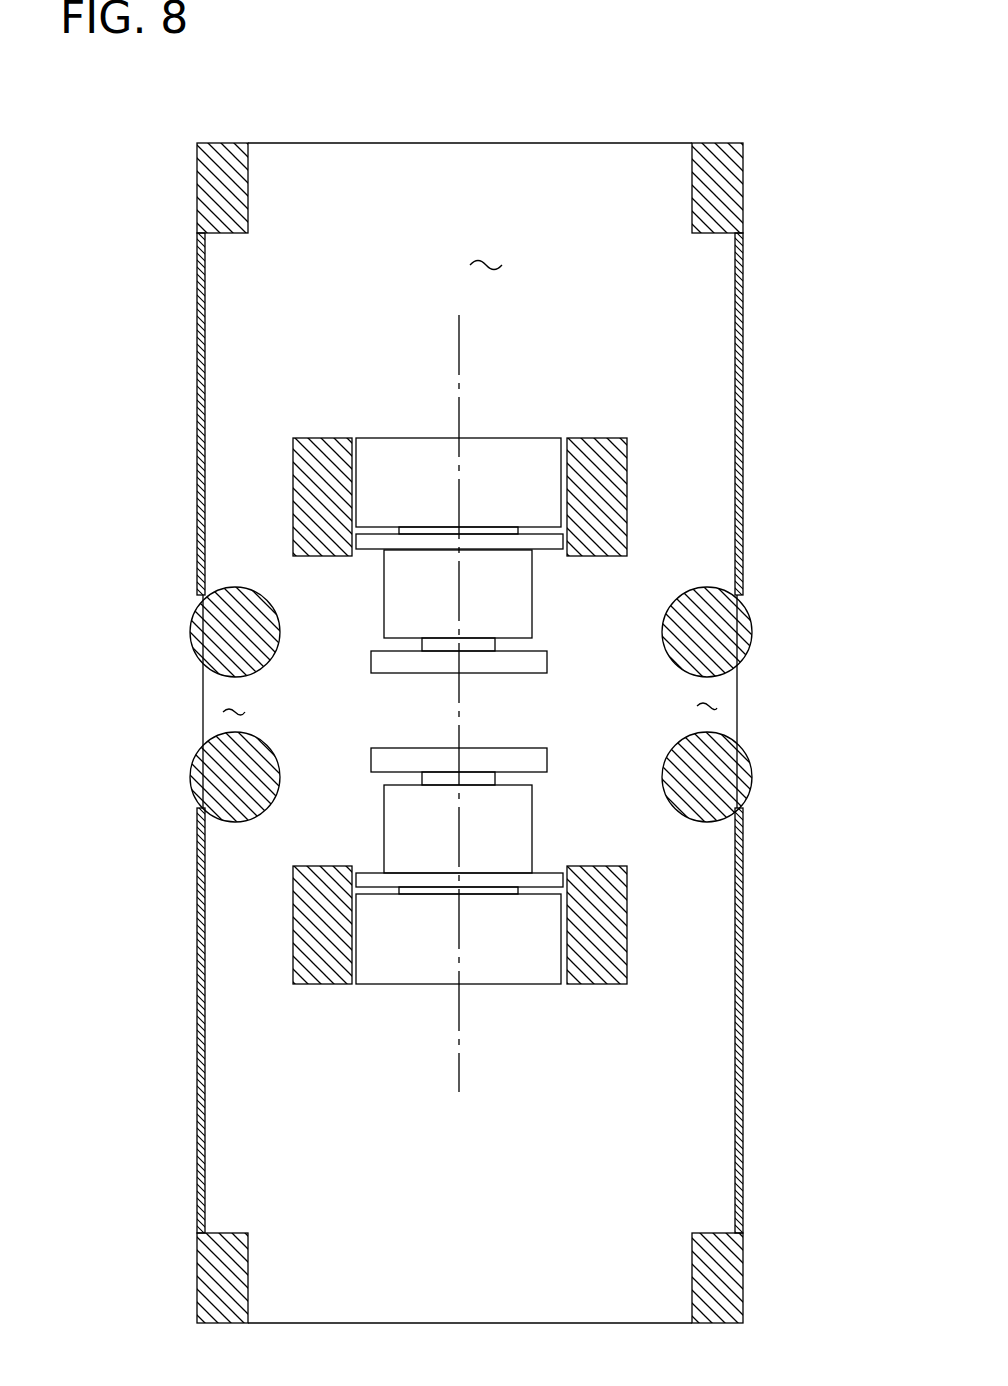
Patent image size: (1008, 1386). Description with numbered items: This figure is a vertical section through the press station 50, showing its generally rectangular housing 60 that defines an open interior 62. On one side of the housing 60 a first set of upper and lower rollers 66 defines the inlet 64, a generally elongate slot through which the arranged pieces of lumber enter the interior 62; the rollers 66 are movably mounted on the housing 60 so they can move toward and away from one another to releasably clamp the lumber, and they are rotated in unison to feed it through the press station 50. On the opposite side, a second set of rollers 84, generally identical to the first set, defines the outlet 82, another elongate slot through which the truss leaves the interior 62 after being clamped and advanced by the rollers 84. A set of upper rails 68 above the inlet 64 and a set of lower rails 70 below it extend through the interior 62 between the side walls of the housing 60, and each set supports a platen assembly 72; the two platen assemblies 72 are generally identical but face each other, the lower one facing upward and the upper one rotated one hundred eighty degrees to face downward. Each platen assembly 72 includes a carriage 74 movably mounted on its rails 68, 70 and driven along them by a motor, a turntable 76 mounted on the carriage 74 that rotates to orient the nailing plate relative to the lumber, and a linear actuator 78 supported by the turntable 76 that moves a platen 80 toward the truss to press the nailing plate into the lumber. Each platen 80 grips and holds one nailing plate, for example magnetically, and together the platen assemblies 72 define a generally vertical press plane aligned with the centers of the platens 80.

The press station 50 is at (724, 96).
The housing 60 is at (743, 323).
The open interior 62 is at (485, 248).
The inlet 64 is at (718, 708).
The first set of rollers 66 is at (747, 620).
The upper rails 68 is at (316, 438).
The lower rails 70 is at (315, 985).
The platen assembly 72 is at (520, 405).
The carriage 74 is at (411, 465).
The turntable 76 is at (545, 550).
The linear actuator 78 is at (384, 603).
The platen 80 is at (547, 660).
The outlet 82 is at (235, 714).
The second set of rollers 84 is at (193, 622).